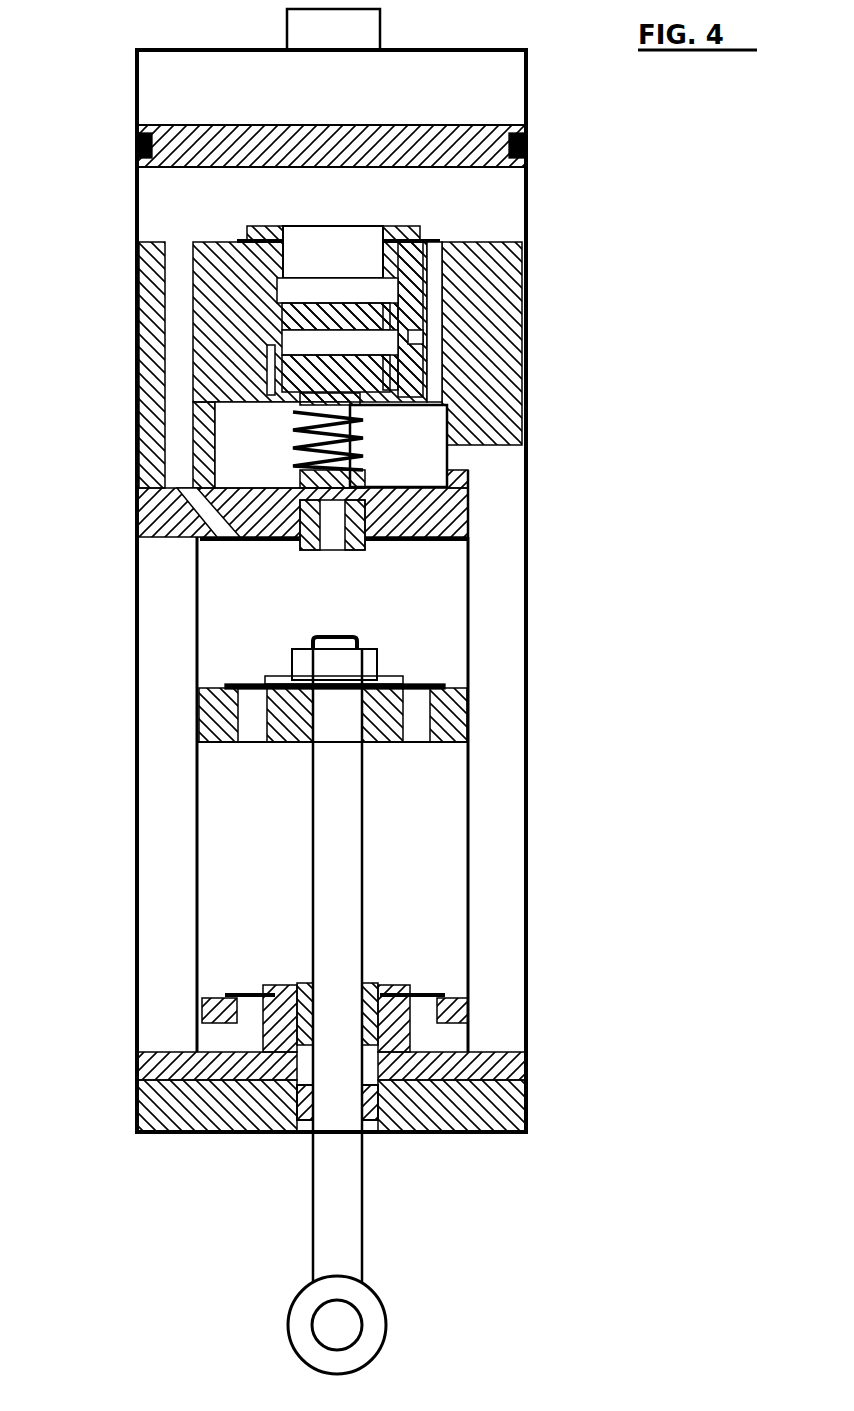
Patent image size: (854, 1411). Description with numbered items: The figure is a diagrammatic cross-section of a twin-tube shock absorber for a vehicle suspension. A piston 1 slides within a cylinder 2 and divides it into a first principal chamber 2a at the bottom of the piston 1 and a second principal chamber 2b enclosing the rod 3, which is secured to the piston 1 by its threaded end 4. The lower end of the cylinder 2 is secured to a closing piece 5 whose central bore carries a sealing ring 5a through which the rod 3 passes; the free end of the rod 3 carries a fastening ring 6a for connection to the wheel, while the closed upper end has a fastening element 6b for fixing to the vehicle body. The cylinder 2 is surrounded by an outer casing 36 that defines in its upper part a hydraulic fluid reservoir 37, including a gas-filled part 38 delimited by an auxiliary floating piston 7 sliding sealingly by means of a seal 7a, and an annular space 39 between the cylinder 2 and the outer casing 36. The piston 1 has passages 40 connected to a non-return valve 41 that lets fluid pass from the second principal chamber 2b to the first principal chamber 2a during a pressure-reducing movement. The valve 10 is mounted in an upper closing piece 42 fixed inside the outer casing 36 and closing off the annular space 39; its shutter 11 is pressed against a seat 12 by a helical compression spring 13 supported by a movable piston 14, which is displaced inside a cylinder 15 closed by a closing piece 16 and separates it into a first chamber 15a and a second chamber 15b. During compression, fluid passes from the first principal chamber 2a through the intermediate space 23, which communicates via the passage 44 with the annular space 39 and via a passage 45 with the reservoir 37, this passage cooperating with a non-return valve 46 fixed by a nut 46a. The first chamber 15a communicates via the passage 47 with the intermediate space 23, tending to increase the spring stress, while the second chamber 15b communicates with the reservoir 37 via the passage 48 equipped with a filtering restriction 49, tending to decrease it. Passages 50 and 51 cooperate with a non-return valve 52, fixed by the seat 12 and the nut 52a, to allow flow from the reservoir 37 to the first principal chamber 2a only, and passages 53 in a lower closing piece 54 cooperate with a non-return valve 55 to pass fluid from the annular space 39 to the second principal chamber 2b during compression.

The piston 1 is at (197, 711).
The cylinder 2 is at (197, 840).
The first principal chamber 2a is at (237, 602).
The second principal chamber 2b is at (237, 870).
The rod 3 is at (330, 882).
The threaded end 4 is at (335, 642).
The closing piece 5 is at (173, 1093).
The sealing ring 5a is at (300, 1102).
The fastening ring 6a is at (300, 1330).
The fastening element 6b is at (312, 24).
The auxiliary floating piston 7 is at (200, 137).
The seal 7a is at (140, 145).
The valve 10 is at (287, 443).
The shutter 11 is at (297, 471).
The seat 12 is at (215, 512).
The helical compression spring 13 is at (290, 423).
The movable piston 14 is at (300, 402).
The cylinder 15 is at (400, 362).
The first chamber 15a is at (300, 342).
The second chamber 15b is at (300, 388).
The closing piece 16 is at (277, 318).
The intermediate space 23 is at (452, 420).
The outer casing 36 is at (528, 800).
The hydraulic fluid reservoir 37 is at (175, 190).
The gas-filled part 38 is at (180, 72).
The annular space 39 is at (497, 765).
The passages 40 is at (415, 715).
The non-return valve 41 is at (430, 684).
The upper closing piece 42 is at (490, 320).
The passage 44 is at (495, 462).
The passage 45 is at (432, 268).
The non-return valve 46 is at (222, 240).
The nut 46a is at (410, 230).
The passage 47 is at (272, 365).
The passage 48 is at (420, 292).
The filtering restriction 49 is at (420, 342).
The passage 50 is at (175, 262).
The passage 51 is at (215, 535).
The non-return valve 52 is at (228, 548).
The nut 52a is at (470, 515).
The passages 53 is at (223, 1038).
The lower closing piece 54 is at (175, 1062).
The non-return valve 55 is at (245, 995).